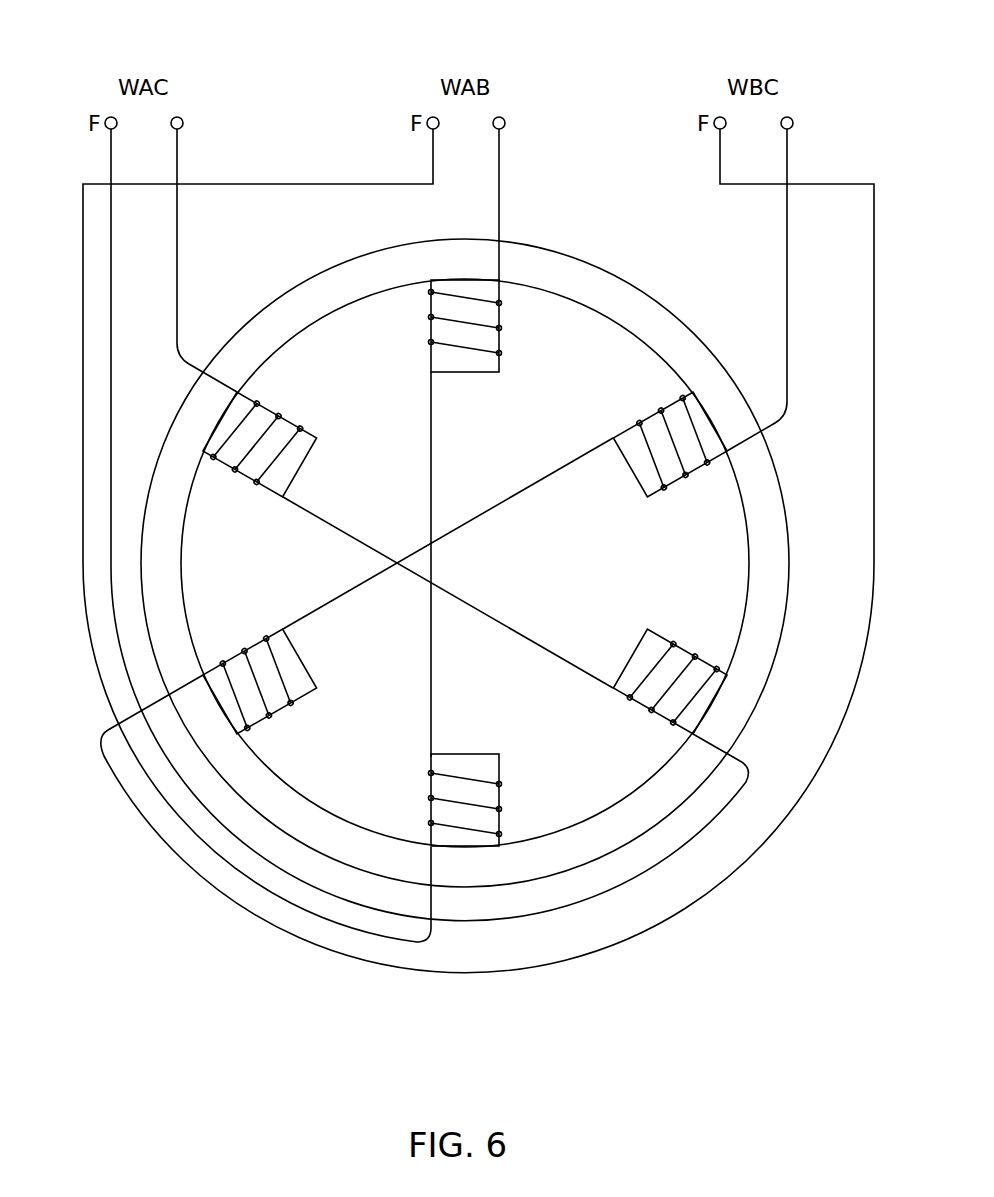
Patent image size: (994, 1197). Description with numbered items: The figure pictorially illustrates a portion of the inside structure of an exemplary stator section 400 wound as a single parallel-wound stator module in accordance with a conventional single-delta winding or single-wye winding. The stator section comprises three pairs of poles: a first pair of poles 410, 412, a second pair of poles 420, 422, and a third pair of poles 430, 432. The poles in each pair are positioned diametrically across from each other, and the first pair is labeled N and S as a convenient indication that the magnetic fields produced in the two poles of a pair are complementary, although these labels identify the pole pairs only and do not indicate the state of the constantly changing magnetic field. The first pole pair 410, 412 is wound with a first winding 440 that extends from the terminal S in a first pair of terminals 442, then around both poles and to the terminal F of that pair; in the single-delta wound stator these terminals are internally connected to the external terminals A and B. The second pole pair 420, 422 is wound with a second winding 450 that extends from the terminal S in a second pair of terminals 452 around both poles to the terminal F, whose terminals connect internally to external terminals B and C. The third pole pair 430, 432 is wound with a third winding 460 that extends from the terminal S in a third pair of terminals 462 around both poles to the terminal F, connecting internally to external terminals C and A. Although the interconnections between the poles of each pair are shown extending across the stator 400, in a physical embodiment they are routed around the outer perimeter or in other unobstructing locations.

The stator section 400 is at (537, 38).
The first pole of first pole pair 410 is at (483, 342).
The second pole of first pole pair 412 is at (492, 797).
The first pole of second pole pair 420 is at (657, 432).
The second pole of second pole pair 422 is at (277, 700).
The first pole of third pole pair 430 is at (262, 418).
The second pole of third pole pair 432 is at (660, 633).
The first winding 440 is at (257, 184).
The first pair of terminals 442 is at (487, 112).
The second winding 450 is at (720, 157).
The second pair of terminals 452 is at (775, 112).
The third winding 460 is at (235, 236).
The third pair of terminals 462 is at (165, 112).